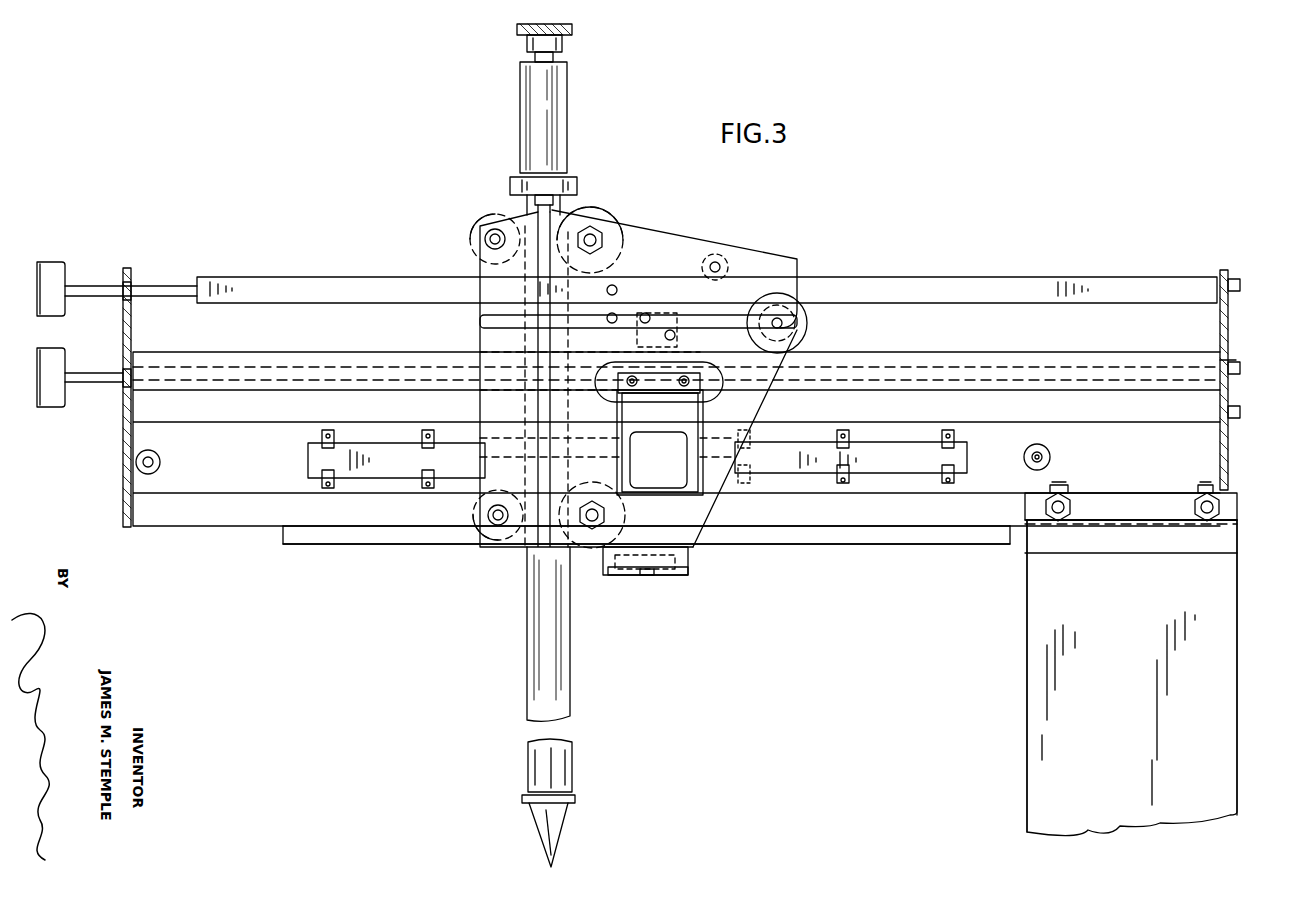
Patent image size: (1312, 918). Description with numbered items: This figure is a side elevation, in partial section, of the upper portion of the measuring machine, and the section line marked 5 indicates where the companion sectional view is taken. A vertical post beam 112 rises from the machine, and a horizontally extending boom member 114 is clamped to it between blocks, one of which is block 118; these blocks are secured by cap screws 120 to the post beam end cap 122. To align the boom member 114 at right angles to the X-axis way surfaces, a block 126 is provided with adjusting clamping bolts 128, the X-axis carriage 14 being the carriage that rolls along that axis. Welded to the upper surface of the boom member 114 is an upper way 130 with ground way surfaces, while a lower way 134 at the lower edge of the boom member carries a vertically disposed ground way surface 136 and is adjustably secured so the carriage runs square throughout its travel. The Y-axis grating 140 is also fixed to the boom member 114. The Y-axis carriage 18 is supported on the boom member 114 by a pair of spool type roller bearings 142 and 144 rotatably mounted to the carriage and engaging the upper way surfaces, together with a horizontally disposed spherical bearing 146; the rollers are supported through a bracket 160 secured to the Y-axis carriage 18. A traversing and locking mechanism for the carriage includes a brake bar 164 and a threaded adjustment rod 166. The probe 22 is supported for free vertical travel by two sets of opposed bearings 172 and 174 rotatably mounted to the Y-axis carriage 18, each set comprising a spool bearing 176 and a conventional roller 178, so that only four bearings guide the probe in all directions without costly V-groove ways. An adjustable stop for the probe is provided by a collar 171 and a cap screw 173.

The section line 5- 5 is at (410, 282).
The X-axis carriage 14 is at (1016, 772).
The Y-axis carriage 18 is at (670, 236).
The probe 22 is at (572, 675).
The vertical post beam 112 is at (1026, 688).
The boom member 114 is at (945, 545).
The block 118 is at (1090, 504).
The cap screws 120 is at (1062, 484).
The post beam end cap 122 is at (1240, 543).
The block 126 is at (1240, 505).
The adjusting clamping bolts 128 is at (1044, 510).
The upper way 130 is at (238, 352).
The lower way 134 is at (836, 545).
The way surface 136 is at (910, 540).
The Y-axis grating 140 is at (912, 465).
The spool type roller bearing 142 is at (482, 326).
The spool type roller bearing 144 is at (812, 323).
The spherical bearing 146 is at (692, 548).
The bracket 160 is at (612, 575).
The brake bar 164 is at (242, 290).
The threaded adjustment rod 166 is at (264, 372).
The collar 171 is at (510, 183).
The opposed bearings 172 is at (581, 200).
The cap screw 173 is at (533, 198).
The opposed bearings 174 is at (518, 545).
The spool bearing 176 is at (616, 214).
The roller 178 is at (474, 224).